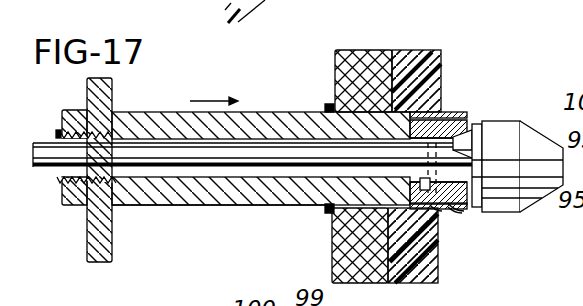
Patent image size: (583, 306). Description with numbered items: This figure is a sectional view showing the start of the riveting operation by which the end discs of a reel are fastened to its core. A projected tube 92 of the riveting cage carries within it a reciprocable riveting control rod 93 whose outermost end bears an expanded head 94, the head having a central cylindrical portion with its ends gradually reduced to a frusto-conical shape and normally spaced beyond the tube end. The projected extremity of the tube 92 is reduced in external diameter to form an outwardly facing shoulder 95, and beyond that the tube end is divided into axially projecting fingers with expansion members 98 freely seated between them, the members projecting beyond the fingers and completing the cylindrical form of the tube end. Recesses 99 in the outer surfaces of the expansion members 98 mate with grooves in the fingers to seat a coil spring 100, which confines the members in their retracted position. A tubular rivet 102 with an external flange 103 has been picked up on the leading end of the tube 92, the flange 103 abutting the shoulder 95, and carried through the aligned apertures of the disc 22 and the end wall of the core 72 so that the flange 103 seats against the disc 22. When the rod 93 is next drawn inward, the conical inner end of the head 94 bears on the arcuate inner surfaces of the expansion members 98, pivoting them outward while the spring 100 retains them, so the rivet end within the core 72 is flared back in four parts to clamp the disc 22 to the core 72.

The disc 22 is at (357, 55).
The core 72 is at (420, 60).
The tube 92 is at (168, 114).
The riveting control rod 93 is at (243, 155).
The head 94 is at (538, 125).
The shoulder 95 is at (312, 205).
The expansion member 98 is at (460, 204).
The recess 99 is at (440, 212).
The coil spring 100 is at (438, 118).
The rivet 102 is at (447, 117).
The external flange 103 is at (327, 105).